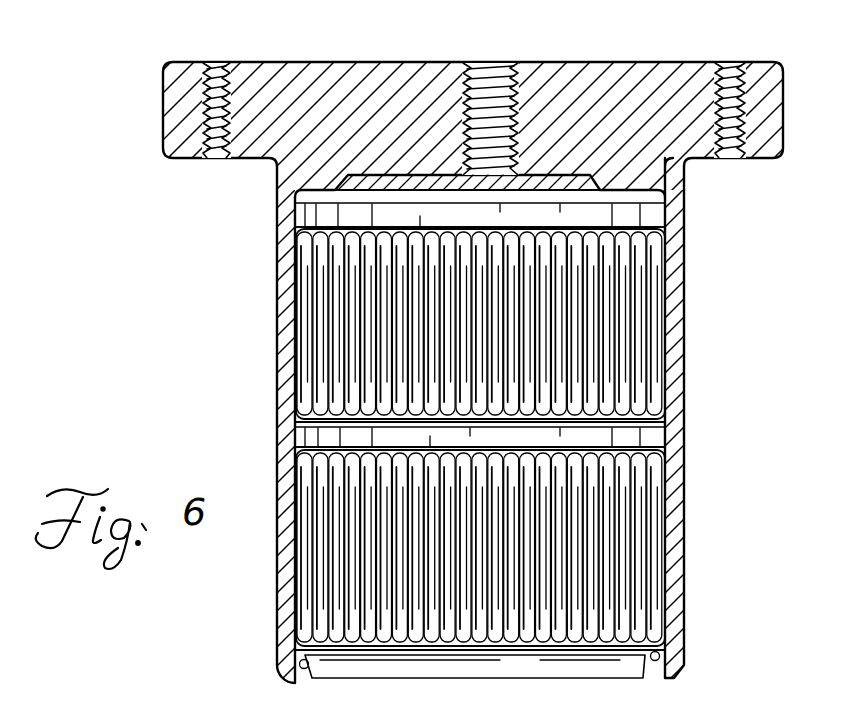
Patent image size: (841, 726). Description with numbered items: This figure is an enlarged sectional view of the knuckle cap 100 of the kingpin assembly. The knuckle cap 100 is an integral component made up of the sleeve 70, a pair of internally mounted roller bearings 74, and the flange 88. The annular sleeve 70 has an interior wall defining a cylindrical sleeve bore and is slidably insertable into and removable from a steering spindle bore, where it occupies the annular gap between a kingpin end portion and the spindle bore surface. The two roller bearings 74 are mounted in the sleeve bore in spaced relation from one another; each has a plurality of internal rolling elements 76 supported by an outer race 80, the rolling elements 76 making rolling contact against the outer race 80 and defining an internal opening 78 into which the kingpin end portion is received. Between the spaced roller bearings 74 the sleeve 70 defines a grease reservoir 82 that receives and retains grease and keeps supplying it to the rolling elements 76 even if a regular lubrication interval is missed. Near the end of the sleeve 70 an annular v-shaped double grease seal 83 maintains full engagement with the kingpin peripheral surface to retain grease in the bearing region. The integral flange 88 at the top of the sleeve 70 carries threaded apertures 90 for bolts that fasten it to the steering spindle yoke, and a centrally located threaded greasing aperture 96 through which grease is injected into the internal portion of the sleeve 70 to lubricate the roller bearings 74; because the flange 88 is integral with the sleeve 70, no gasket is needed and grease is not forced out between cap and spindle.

The knuckle cap 100 is at (130, 48).
The flange 88 is at (623, 87).
The threaded apertures 90 is at (222, 80).
The threaded greasing aperture 96 is at (470, 97).
The internal opening 78 is at (565, 207).
The outer race 80 is at (672, 282).
The roller bearing 74 is at (670, 313).
The internal rolling elements 76 is at (573, 309).
The sleeve 70 is at (672, 384).
The grease reservoir 82 is at (573, 434).
The double grease seal 83 is at (612, 662).